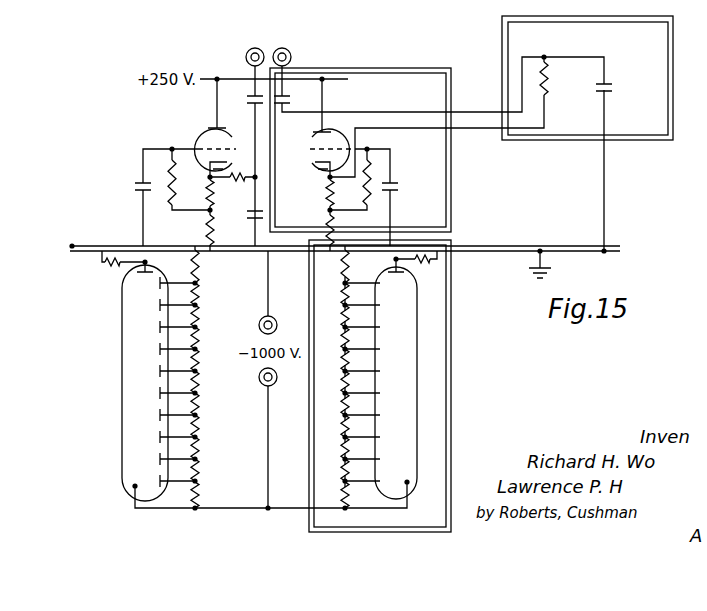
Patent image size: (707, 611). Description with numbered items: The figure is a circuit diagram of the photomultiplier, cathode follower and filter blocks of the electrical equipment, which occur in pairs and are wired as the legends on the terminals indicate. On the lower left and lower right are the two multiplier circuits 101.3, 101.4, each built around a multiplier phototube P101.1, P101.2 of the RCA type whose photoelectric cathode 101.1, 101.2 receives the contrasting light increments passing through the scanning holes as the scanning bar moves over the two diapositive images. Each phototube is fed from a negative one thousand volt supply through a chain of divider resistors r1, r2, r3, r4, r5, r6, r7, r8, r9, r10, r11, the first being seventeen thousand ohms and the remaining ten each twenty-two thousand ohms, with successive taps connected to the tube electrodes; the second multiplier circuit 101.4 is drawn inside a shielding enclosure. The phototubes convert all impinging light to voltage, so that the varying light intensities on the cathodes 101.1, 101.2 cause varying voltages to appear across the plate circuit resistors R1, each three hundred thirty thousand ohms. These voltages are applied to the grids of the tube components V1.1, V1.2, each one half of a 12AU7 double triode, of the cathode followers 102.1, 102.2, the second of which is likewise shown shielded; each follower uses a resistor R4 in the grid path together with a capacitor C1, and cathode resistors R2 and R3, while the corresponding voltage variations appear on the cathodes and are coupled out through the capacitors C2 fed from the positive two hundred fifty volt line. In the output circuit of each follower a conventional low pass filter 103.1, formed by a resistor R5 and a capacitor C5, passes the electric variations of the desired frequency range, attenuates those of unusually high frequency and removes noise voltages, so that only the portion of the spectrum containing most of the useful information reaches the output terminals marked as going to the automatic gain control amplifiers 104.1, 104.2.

The photoelectric cathode 101.1 is at (115, 383).
The photoelectric cathode 101.2 is at (386, 434).
The photomultiplier circuit 101.3 is at (102, 350).
The photomultiplier circuit 101.4 is at (425, 386).
The multiplier phototube P101.1 is at (110, 462).
The multiplier phototube P101.2 is at (426, 457).
The cathode follower 102.1 is at (247, 165).
The cathode follower 102.2 is at (394, 159).
The low pass filter 103.1 is at (204, 214).
The automatic gain control amplifier 104.1 is at (247, 57).
The automatic gain control amplifier 104.2 is at (282, 48).
The cathode follower tube V1.1 is at (207, 130).
The cathode follower tube V1.2 is at (343, 132).
The plate circuit resistor R1 is at (113, 265).
The cathode follower resistor R2 is at (325, 184).
The cathode follower resistor R3 is at (325, 218).
The cathode follower resistor R4 is at (168, 172).
The filter resistor R5 is at (204, 194).
The cathode follower capacitor C1 is at (136, 187).
The cathode follower capacitor C2 is at (246, 95).
The filter capacitor C5 is at (429, 163).
The photomultiplier divider resistor r1 is at (270, 266).
The photomultiplier divider resistor r2 is at (270, 295).
The photomultiplier divider resistor r3 is at (270, 317).
The photomultiplier divider resistor r4 is at (270, 339).
The photomultiplier divider resistor r5 is at (270, 361).
The photomultiplier divider resistor r6 is at (270, 383).
The photomultiplier divider resistor r7 is at (270, 405).
The photomultiplier divider resistor r8 is at (270, 427).
The photomultiplier divider resistor r9 is at (270, 449).
The photomultiplier divider resistor r10 is at (270, 471).
The photomultiplier divider resistor r11 is at (270, 495).